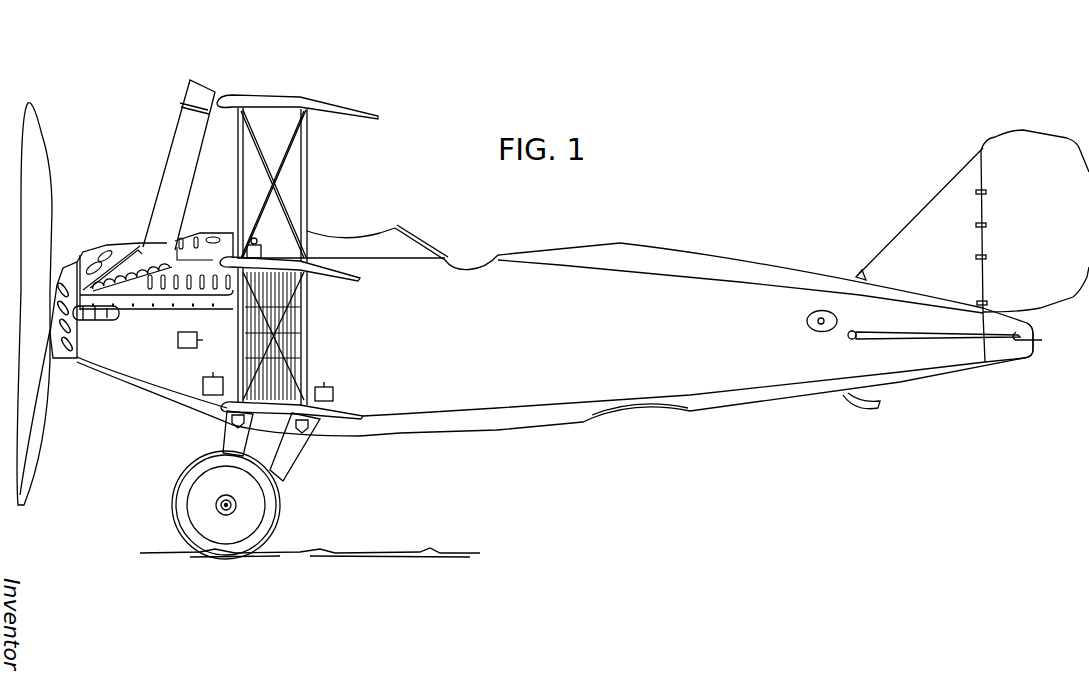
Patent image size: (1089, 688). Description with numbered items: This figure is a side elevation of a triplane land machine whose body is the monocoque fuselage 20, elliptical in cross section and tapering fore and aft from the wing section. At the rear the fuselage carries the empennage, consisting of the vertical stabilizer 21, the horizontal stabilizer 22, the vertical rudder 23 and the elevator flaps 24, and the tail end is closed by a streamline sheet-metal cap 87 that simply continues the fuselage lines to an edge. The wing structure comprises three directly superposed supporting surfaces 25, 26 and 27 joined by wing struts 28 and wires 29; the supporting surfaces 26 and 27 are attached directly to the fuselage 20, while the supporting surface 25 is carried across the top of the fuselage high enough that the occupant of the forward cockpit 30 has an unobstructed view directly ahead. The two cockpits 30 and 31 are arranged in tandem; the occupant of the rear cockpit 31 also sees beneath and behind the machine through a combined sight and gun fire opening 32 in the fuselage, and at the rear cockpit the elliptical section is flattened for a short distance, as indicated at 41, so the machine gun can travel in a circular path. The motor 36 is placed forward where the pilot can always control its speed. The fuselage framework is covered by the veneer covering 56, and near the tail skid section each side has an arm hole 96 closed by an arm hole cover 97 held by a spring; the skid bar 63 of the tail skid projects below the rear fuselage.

The fuselage 20 is at (497, 427).
The vertical stabilizer 21 is at (910, 232).
The horizontal stabilizer 22 is at (900, 335).
The vertical rudder 23 is at (1036, 141).
The elevator flaps 24 is at (1033, 333).
The supporting surface 25 is at (297, 103).
The supporting surface 26 is at (290, 267).
The supporting surface 27 is at (292, 404).
The wing struts 28 is at (307, 153).
The wires 29 is at (281, 211).
The cockpit 30 is at (357, 236).
The cockpit 31 is at (434, 252).
The combined sight and gun fire opening 32 is at (650, 411).
The motor 36 is at (128, 280).
The flattened surface 41 is at (568, 248).
The fuselage covering 56 is at (762, 272).
The skid bar 63 is at (858, 411).
The cap 87 is at (1016, 352).
The arm holes 96 is at (807, 325).
The arm hole covers 97 is at (833, 322).